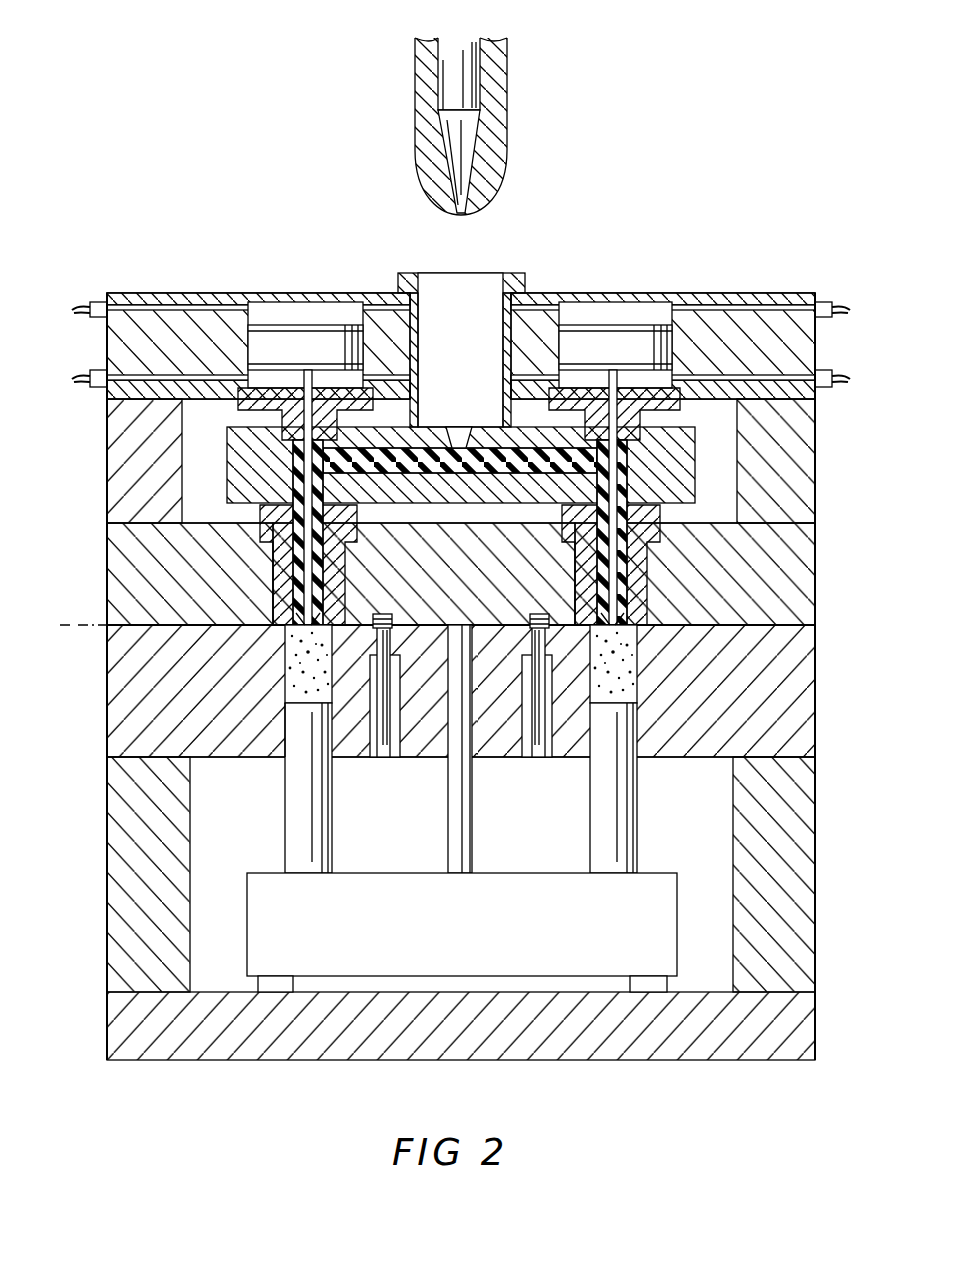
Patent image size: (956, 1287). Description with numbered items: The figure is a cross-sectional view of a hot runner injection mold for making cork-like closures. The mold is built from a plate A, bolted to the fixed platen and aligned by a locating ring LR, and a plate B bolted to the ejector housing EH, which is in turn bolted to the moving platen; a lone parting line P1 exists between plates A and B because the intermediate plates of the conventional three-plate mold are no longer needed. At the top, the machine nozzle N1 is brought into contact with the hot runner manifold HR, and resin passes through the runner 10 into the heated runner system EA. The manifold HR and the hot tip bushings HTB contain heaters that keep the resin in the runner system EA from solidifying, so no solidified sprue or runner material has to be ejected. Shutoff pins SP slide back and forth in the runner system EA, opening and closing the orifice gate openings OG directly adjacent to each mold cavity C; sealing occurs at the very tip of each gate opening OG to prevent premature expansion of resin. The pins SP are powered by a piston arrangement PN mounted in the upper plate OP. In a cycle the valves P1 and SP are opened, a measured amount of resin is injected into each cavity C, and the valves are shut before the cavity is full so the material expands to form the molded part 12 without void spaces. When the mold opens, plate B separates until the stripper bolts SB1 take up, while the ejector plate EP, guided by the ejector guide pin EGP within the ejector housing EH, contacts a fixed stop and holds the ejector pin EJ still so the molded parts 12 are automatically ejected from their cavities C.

The parting line P1 is at (458, 83).
The injection nozzle N1 is at (490, 140).
The locating ring LR is at (460, 288).
The piston arrangement PN is at (292, 337).
The outer plate OP is at (753, 342).
The runner 10 is at (423, 457).
The hot runner manifold HR is at (683, 455).
The shutoff pins SP is at (293, 440).
The runner system EA is at (500, 463).
The hot tip bushings HTB is at (640, 578).
The plate A is at (800, 603).
The plate B is at (807, 647).
The gate opening OG is at (298, 632).
The cavity C is at (298, 668).
The molded part 12 is at (281, 760).
The stripper bolts SB1 is at (378, 745).
The ejector pin EJ is at (287, 828).
The ejector guide pin EGP is at (452, 818).
The ejector housing EH is at (803, 867).
The ejector plate EP is at (462, 932).